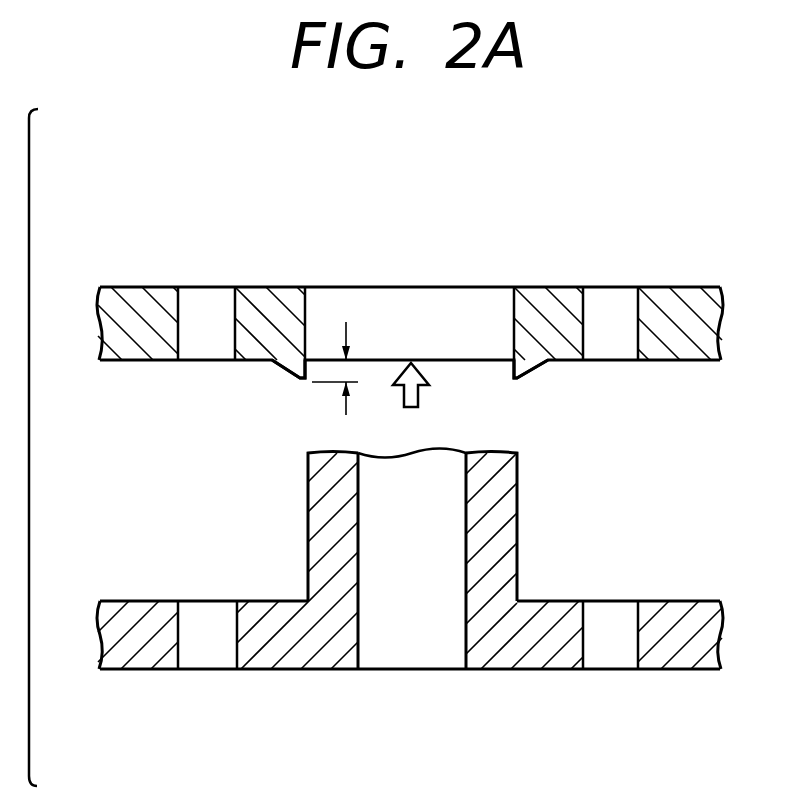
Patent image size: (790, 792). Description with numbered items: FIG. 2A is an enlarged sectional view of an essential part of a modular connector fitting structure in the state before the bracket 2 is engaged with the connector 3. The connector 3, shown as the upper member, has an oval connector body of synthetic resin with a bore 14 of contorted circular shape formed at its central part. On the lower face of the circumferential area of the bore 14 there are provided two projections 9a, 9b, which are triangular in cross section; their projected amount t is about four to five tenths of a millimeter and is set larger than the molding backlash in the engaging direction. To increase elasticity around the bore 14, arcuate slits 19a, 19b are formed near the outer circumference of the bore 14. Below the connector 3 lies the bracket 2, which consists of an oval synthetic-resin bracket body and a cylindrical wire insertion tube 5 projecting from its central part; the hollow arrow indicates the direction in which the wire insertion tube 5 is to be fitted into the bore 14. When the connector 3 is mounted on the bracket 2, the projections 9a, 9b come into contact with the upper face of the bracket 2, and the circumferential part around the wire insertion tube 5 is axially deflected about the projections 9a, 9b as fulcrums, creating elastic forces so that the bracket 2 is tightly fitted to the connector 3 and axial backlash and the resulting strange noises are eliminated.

The bracket 2 is at (146, 669).
The connector 3 is at (150, 288).
The wire insertion tube 5 is at (495, 490).
The projection 9a is at (527, 382).
The projection 9b is at (300, 382).
The bore 14 is at (464, 312).
The slit 19a is at (608, 312).
The slit 19b is at (210, 312).
The projected amount t is at (336, 377).